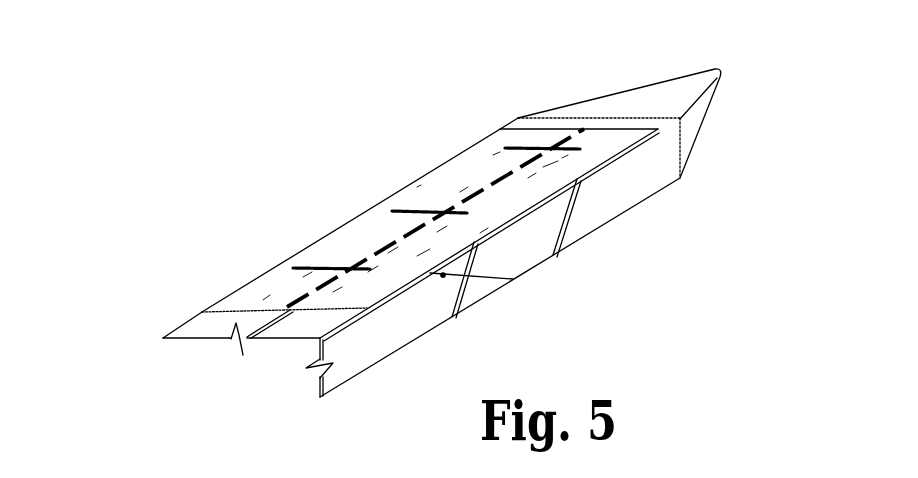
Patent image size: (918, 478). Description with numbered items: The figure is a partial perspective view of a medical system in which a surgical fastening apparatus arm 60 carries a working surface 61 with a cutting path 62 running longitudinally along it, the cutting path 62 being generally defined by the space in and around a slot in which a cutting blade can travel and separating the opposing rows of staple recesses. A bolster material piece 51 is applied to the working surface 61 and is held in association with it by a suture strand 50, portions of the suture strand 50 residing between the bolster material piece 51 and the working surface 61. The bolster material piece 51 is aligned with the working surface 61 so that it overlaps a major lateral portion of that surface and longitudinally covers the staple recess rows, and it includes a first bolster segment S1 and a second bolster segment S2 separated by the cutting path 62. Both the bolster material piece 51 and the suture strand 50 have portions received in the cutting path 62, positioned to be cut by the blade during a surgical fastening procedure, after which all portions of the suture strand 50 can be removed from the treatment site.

The suture strand 50 is at (299, 266).
The bolster material piece 51 is at (258, 277).
The surgical fastening apparatus arm 60 is at (666, 80).
The working surface 61 is at (210, 322).
The cutting path 62 is at (398, 237).
The first bolster segment S1 is at (455, 164).
The second bolster segment S2 is at (522, 190).